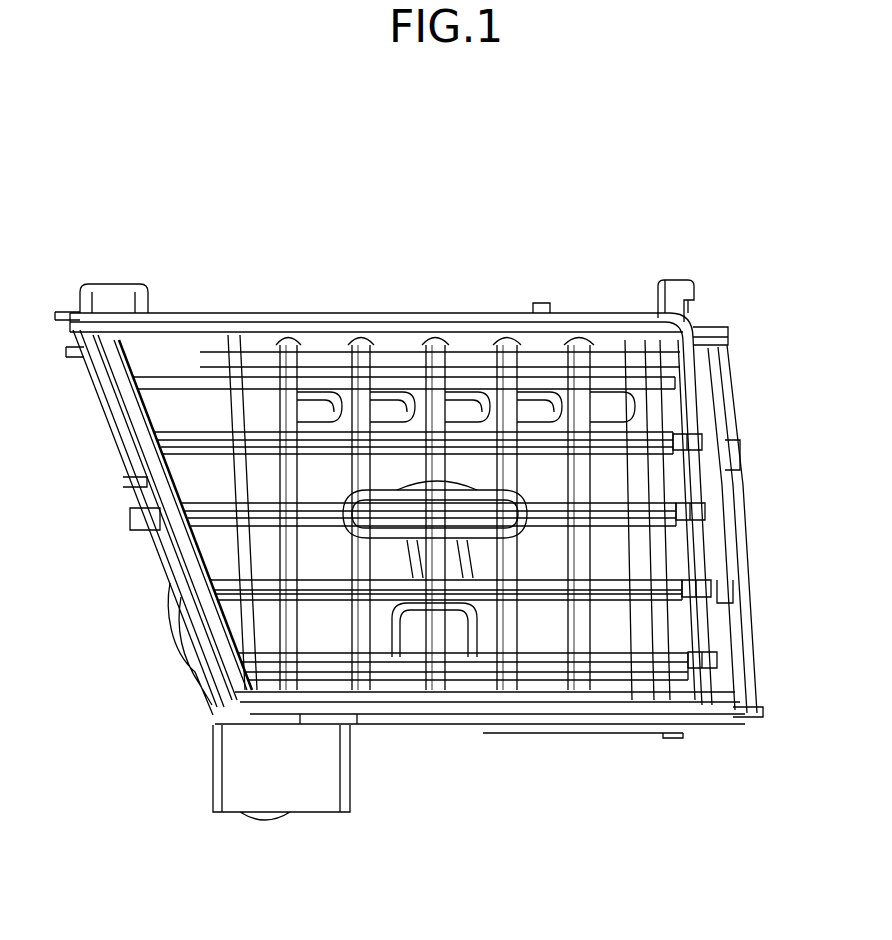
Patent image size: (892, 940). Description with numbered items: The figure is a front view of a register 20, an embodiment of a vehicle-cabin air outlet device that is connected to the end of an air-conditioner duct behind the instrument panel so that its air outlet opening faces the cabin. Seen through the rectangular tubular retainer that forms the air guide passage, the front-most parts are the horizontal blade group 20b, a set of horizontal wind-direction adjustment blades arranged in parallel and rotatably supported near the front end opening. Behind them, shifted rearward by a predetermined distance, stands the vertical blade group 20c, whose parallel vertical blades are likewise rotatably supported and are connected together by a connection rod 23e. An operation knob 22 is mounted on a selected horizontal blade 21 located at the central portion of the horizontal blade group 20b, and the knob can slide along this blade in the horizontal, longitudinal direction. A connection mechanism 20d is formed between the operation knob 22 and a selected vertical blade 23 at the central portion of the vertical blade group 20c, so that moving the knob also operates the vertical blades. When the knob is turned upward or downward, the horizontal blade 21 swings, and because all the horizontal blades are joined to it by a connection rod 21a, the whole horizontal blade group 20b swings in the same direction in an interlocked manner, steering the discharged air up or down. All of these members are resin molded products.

The register 20 is at (181, 290).
The horizontal blade group 20b is at (540, 430).
The vertical blade group 20c is at (591, 622).
The connection mechanism 20d is at (471, 567).
The horizontal blade 21 is at (213, 517).
The connection rod 21a is at (740, 487).
The operation knob 22 is at (348, 525).
The vertical blade 23 is at (415, 393).
The connection rod 23e is at (333, 390).